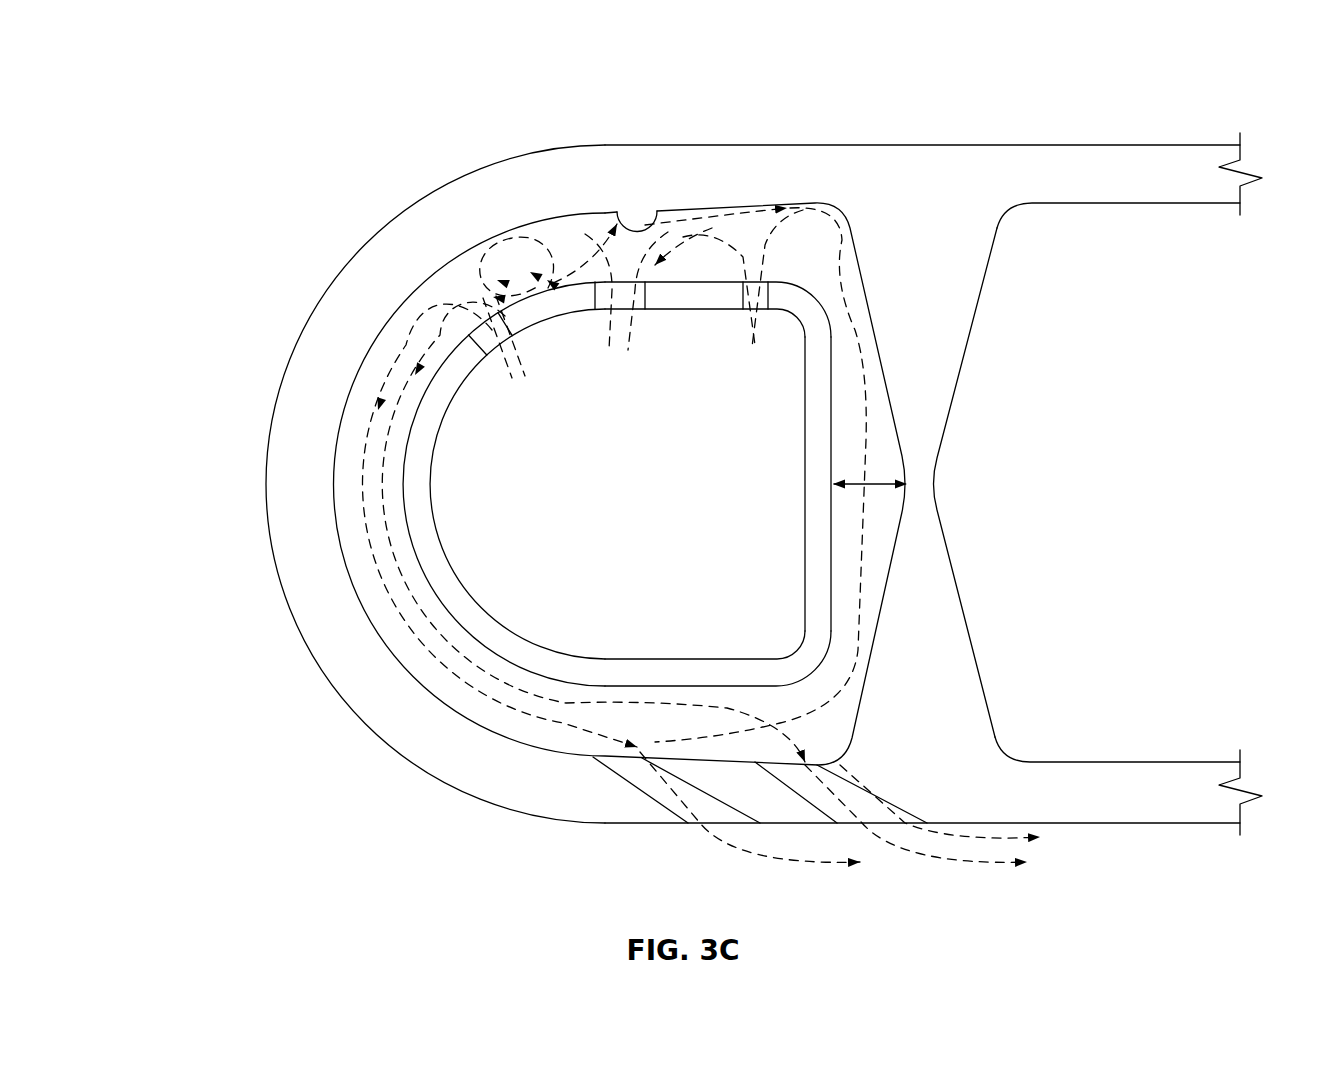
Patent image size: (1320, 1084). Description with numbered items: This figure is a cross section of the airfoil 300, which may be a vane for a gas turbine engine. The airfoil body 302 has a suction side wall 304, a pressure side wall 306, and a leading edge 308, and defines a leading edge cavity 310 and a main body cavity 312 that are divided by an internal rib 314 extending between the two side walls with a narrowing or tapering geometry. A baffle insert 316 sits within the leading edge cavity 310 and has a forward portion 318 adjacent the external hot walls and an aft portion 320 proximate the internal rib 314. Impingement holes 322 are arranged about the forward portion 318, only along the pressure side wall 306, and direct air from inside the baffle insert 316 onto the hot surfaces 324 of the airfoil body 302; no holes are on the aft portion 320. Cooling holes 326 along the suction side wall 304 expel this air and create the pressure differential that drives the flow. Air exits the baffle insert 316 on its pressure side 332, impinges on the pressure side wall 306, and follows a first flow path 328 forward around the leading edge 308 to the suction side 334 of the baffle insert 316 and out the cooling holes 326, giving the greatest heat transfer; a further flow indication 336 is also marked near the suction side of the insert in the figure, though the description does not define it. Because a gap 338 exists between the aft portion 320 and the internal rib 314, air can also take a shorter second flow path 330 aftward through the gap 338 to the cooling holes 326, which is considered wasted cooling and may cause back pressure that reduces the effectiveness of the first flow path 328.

The airfoil 300 is at (222, 74).
The airfoil body 302 is at (1008, 172).
The suction side wall 304 is at (1117, 823).
The pressure side wall 306 is at (928, 145).
The leading edge 308 is at (265, 488).
The leading edge cavity 310 is at (805, 230).
The main body cavity 312 is at (1172, 235).
The internal rib 314 is at (925, 417).
The baffle insert 316 is at (580, 662).
The forward portion 318 is at (467, 604).
The aft portion 320 is at (808, 468).
The impingement holes 322 is at (640, 316).
The hot surfaces 324 is at (652, 232).
The cooling holes 326 is at (700, 825).
The first flow path 328 is at (460, 280).
The second flow path 330 is at (861, 522).
The pressure side 332 is at (567, 282).
The suction side 334 is at (436, 483).
The flow direction 336 is at (665, 650).
The gap 338 is at (880, 483).